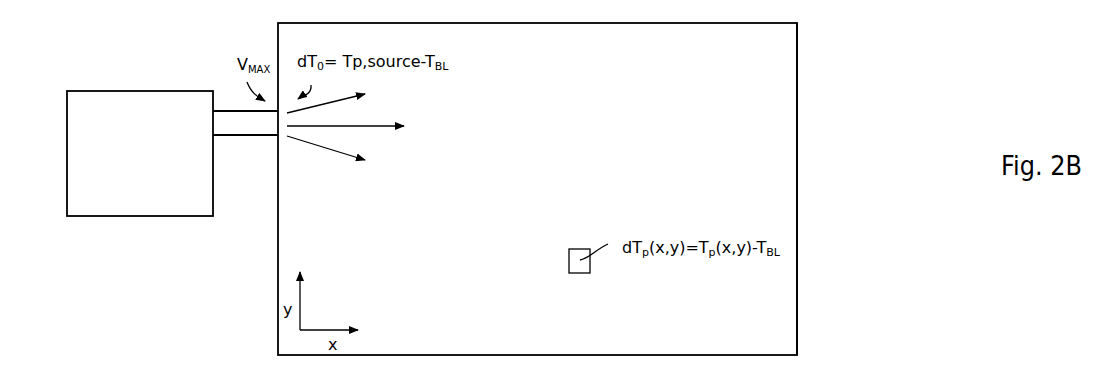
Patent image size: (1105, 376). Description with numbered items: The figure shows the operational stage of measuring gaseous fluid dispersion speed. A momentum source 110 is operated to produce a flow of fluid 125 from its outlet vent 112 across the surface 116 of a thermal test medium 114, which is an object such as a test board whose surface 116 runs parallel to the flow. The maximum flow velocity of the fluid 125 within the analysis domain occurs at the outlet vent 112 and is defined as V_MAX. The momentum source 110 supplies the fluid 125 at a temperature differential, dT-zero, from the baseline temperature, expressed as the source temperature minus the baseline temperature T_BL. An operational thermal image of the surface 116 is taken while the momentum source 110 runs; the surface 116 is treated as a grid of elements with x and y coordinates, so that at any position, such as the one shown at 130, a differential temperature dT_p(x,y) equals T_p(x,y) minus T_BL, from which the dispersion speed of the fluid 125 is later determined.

The momentum source 110 is at (133, 91).
The outlet vent 112 is at (242, 111).
The thermal test medium 114 is at (797, 106).
The surface 116 is at (779, 49).
The flow of gaseous fluid 125 is at (346, 184).
The position on the surface 130 is at (578, 273).